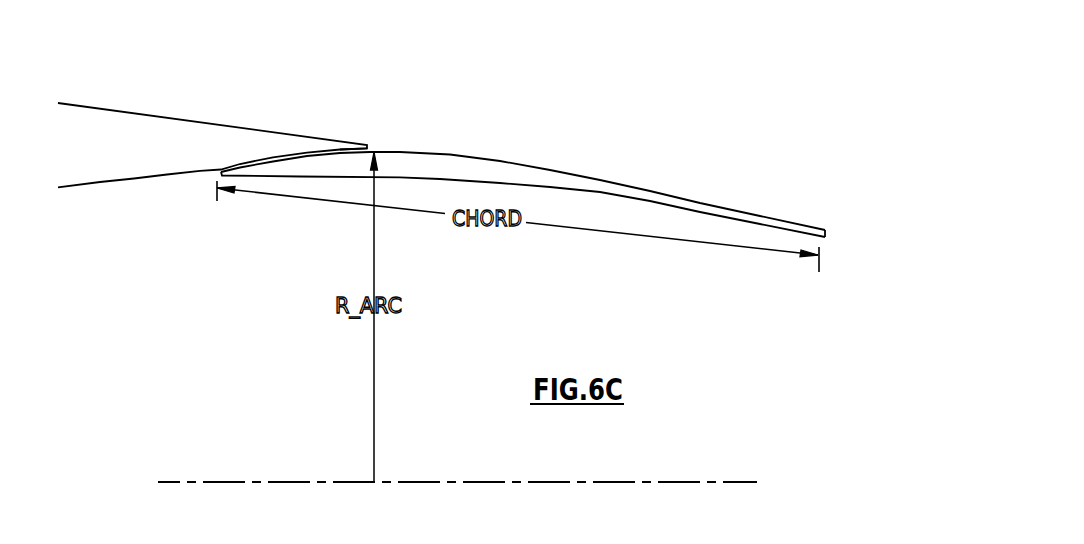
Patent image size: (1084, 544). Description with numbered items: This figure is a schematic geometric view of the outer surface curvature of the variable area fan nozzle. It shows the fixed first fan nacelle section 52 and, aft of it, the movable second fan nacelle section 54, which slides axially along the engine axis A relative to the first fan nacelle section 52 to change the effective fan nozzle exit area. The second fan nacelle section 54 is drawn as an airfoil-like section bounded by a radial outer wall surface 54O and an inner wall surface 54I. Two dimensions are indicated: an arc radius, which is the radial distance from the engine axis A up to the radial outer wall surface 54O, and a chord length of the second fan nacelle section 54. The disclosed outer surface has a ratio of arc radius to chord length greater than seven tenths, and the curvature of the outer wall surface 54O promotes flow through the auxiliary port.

The first fan nacelle section 52 is at (153, 159).
The second fan nacelle section 54 is at (523, 173).
The radial outer wall surface 54O is at (436, 151).
The inner wall surface 54I is at (586, 196).
The engine axis A is at (623, 481).